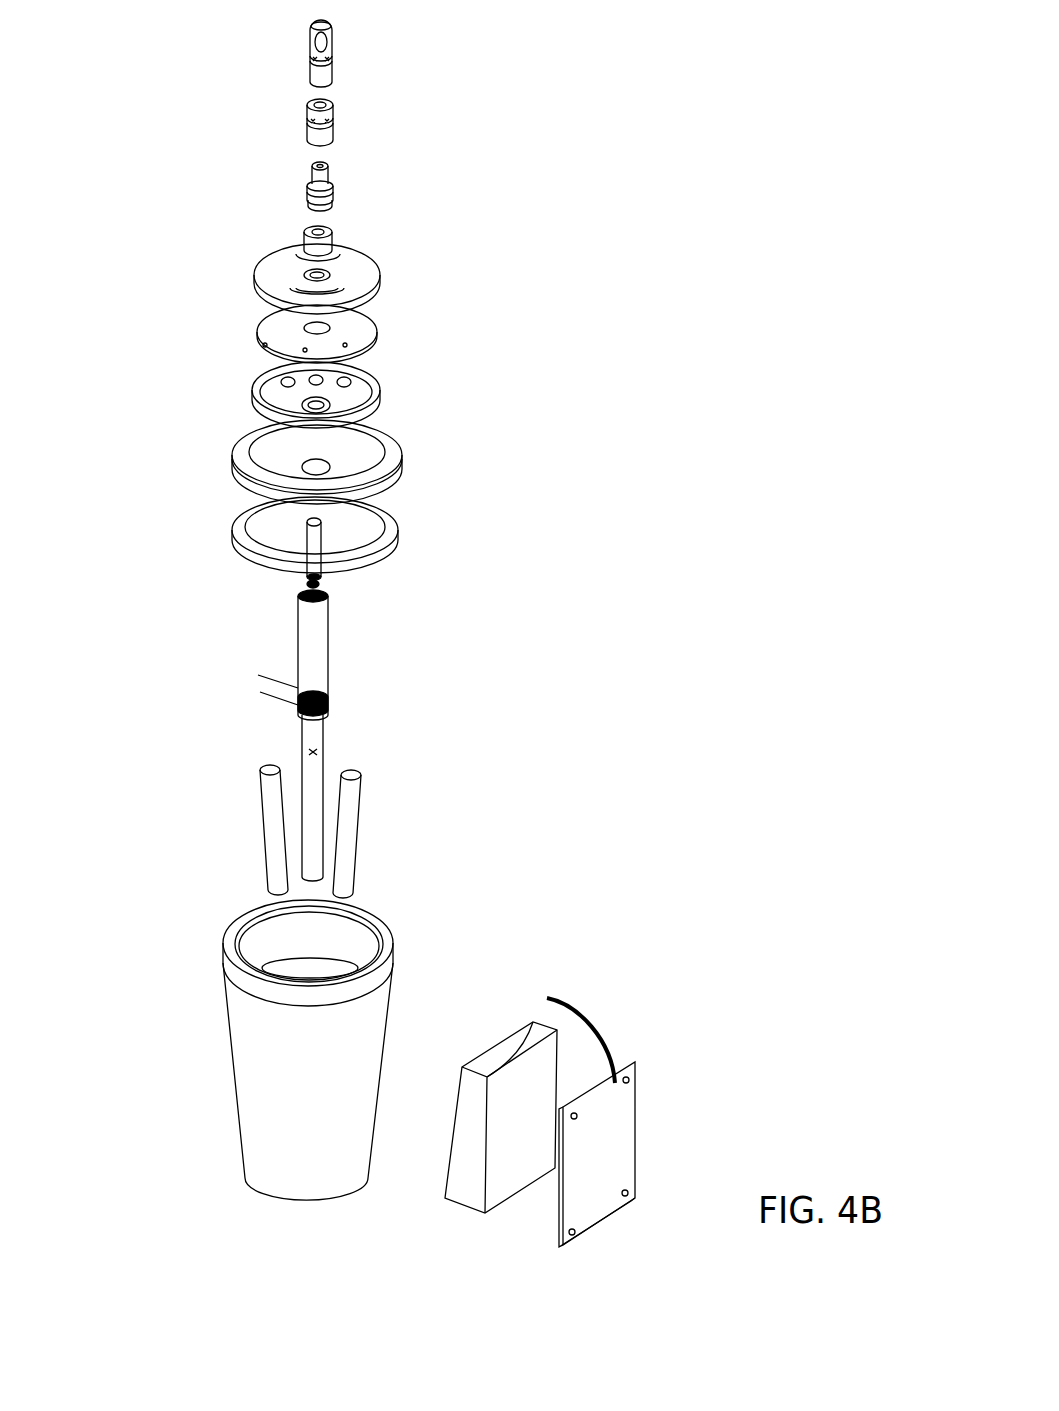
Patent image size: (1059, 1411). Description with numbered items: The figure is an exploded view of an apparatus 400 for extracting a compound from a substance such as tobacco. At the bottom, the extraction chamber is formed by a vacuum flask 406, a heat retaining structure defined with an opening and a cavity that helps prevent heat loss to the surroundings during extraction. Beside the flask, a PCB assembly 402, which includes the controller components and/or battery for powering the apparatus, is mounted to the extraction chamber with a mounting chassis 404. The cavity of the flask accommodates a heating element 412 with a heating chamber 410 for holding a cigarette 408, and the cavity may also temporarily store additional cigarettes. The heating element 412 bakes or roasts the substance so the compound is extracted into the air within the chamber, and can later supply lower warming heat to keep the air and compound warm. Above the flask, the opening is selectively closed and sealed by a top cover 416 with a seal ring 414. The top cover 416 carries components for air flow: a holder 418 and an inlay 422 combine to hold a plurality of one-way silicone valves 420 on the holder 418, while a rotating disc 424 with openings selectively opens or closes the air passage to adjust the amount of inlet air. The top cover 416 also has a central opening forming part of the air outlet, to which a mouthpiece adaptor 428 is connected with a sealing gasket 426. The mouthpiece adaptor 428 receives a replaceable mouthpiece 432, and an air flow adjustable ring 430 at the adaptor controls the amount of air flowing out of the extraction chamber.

The apparatus 400 is at (117, 165).
The PCB assembly 402 is at (637, 1097).
The mounting chassis 404 is at (520, 1057).
The vacuum flask 406 is at (387, 1018).
The cigarette 408 is at (358, 842).
The heating chamber 410 is at (323, 753).
The heating element 412 is at (328, 718).
The seal ring 414 is at (377, 562).
The top cover 416 is at (380, 497).
The holder 418 is at (380, 427).
The one-way silicone valves 420 is at (380, 397).
The inlay 422 is at (378, 343).
The rotating disc 424 is at (380, 282).
The sealing gasket 426 is at (331, 250).
The mouthpiece adaptor 428 is at (325, 197).
The air flow adjustable ring 430 is at (320, 143).
The replaceable mouthpiece 432 is at (322, 88).